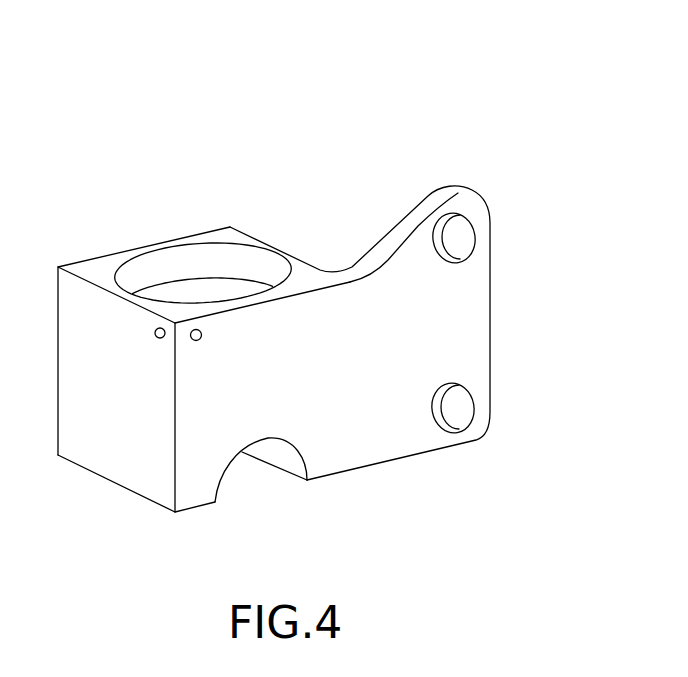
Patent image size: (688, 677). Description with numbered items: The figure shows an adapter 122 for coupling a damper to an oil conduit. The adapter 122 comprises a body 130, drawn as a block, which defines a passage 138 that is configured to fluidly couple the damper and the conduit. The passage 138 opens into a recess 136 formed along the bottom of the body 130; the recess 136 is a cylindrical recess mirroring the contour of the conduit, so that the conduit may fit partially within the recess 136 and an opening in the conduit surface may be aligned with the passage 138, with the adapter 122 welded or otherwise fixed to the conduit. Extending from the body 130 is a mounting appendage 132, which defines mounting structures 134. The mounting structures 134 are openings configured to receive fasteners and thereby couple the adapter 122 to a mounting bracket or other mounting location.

The adapter 122 is at (460, 33).
The body 130 is at (91, 271).
The mounting appendage 132 is at (479, 342).
The mounting structures 134 is at (462, 419).
The recess 136 is at (258, 475).
The passage 138 is at (270, 272).